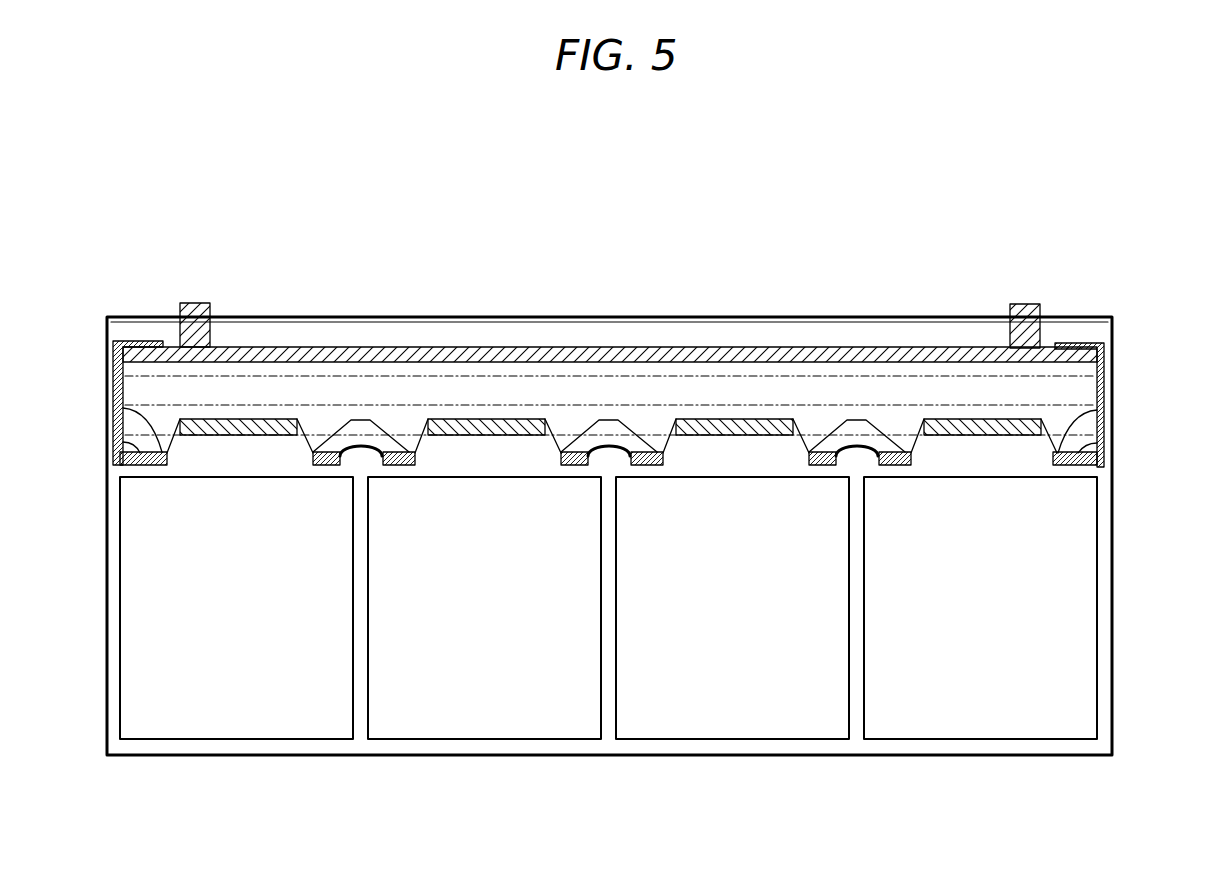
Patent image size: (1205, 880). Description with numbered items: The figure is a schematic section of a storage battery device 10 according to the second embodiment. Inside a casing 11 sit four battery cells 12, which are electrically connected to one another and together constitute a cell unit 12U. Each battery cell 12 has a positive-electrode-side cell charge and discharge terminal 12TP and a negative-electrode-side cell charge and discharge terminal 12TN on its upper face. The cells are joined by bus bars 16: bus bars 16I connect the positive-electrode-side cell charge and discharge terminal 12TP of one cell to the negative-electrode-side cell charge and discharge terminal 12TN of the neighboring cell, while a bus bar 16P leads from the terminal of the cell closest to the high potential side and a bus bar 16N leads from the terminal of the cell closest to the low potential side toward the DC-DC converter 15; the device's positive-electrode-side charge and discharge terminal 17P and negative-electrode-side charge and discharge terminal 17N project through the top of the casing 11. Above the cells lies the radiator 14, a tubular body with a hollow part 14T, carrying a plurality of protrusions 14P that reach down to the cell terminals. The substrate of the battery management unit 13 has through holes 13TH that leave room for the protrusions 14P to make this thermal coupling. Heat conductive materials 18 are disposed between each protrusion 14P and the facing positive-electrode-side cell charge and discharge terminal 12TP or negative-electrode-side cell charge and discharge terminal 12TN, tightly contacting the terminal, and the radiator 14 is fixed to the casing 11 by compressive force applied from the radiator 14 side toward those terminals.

The storage battery device 10 is at (611, 160).
The casing 11 is at (508, 318).
The battery cells 12 is at (238, 715).
The cell unit 12U is at (609, 797).
The positive-electrode-side cell charge and discharge terminal 12TP is at (160, 470).
The negative-electrode-side cell charge and discharge terminal 12TN is at (313, 473).
The battery management unit 13 is at (1008, 443).
The through holes 13TH is at (312, 447).
The radiator 14 is at (251, 372).
The protrusions 14P is at (122, 412).
The hollow part 14T is at (462, 382).
The DC-DC converter 15 is at (734, 348).
The bus bars 16 is at (640, 325).
The bus bar 16P is at (134, 341).
The bus bars 16I is at (361, 445).
The bus bar 16N is at (1088, 343).
The positive-electrode-side charge and discharge terminal 17P is at (193, 303).
The negative-electrode-side charge and discharge terminal 17N is at (1024, 305).
The heat conductive materials 18 is at (118, 447).